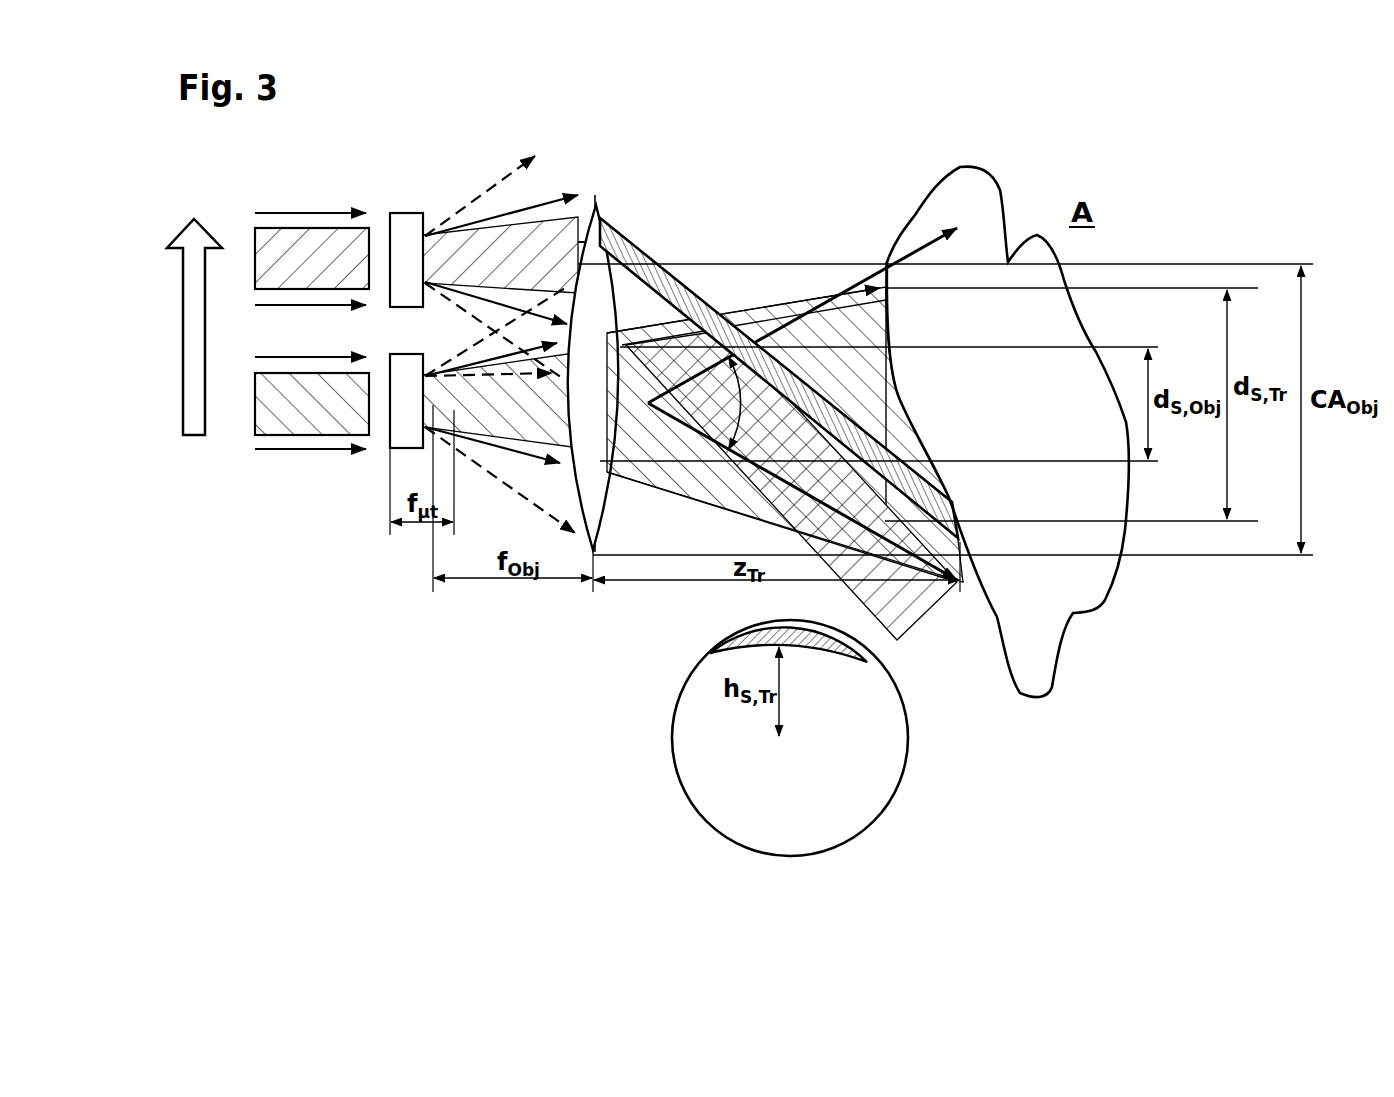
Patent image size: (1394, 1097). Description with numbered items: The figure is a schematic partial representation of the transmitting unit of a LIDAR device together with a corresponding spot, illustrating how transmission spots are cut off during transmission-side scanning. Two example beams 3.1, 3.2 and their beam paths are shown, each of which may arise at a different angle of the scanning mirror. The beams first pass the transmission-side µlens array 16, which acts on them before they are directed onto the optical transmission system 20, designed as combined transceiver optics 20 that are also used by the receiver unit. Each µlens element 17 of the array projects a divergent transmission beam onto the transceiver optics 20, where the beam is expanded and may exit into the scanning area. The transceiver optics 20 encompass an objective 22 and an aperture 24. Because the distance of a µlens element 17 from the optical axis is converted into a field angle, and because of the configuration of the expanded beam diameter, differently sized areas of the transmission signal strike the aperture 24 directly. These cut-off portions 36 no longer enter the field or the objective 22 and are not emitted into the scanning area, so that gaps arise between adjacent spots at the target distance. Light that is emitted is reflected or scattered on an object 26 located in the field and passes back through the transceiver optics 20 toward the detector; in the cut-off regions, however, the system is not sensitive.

The beam 3.1 is at (264, 420).
The beam 3.2 is at (262, 243).
The transmission-side µlens array 16 is at (435, 186).
The µlens element 17 is at (407, 224).
The optical transmission system / transceiver optics 20 is at (652, 186).
The objective 22 is at (640, 246).
The aperture 24 is at (598, 202).
The object 26 is at (1037, 416).
The cut-off portions 36 is at (706, 290).